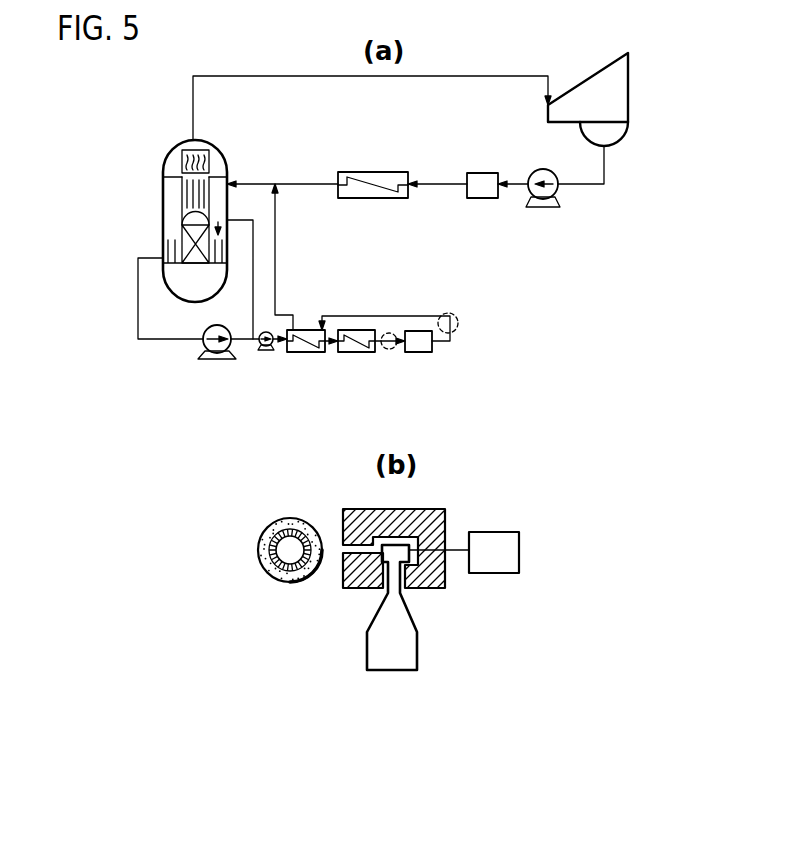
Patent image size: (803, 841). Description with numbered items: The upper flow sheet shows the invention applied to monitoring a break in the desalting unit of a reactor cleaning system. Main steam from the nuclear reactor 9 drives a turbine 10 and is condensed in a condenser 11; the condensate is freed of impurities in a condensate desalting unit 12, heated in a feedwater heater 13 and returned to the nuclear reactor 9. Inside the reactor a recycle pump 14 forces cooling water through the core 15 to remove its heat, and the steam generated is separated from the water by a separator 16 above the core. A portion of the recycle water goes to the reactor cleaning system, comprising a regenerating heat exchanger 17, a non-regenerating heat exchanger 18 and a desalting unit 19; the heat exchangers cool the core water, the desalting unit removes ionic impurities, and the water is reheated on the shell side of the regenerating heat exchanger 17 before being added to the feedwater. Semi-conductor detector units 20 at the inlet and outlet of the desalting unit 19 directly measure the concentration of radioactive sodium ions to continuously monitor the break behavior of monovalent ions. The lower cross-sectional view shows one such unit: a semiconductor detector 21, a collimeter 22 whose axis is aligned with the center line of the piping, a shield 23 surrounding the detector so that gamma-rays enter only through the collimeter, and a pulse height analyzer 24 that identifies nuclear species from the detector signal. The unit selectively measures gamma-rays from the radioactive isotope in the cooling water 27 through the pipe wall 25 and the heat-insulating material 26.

The nuclear reactor 9 is at (163, 220).
The turbine 10 is at (628, 85).
The condenser 11 is at (628, 140).
The condensate desalting unit 12 is at (485, 173).
The feedwater heater 13 is at (372, 172).
The recycle pump 14 is at (216, 359).
The core 15 is at (163, 233).
The separator 16 is at (166, 198).
The regenerating heat exchanger 17 is at (303, 352).
The non-regenerating heat exchanger 18 is at (358, 352).
The desalting unit 19 is at (423, 352).
The semi-conductor detector unit 20 is at (389, 349).
The semiconductor detector 21 is at (389, 549).
The collimeter 22 is at (346, 548).
The shield 23 is at (433, 578).
The pulse height analyzer 24 is at (505, 553).
The pipe wall 25 is at (284, 581).
The heat-insulating material 26 is at (262, 567).
The inner liner 27 is at (288, 545).